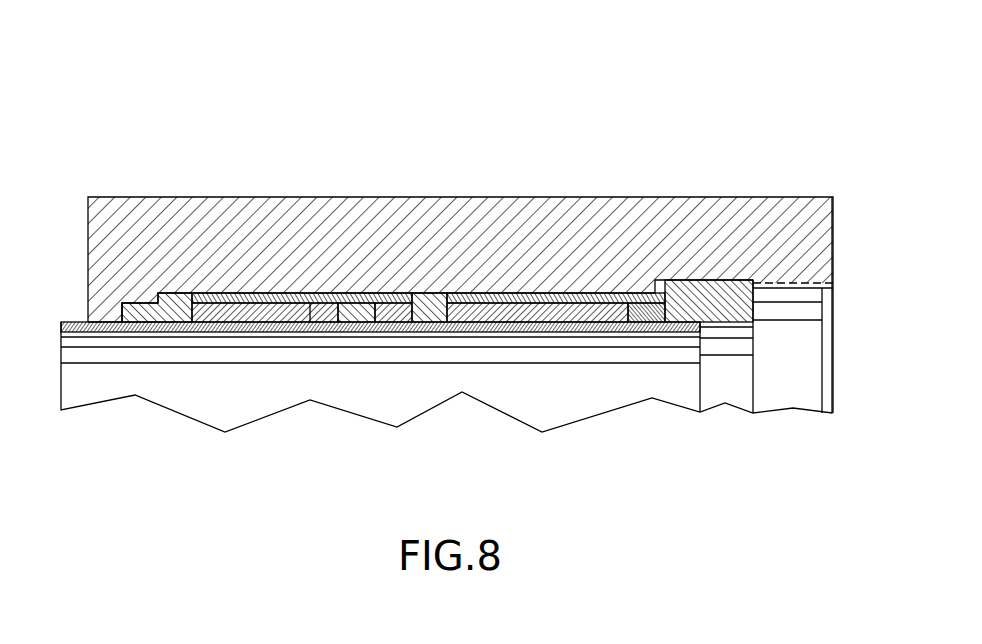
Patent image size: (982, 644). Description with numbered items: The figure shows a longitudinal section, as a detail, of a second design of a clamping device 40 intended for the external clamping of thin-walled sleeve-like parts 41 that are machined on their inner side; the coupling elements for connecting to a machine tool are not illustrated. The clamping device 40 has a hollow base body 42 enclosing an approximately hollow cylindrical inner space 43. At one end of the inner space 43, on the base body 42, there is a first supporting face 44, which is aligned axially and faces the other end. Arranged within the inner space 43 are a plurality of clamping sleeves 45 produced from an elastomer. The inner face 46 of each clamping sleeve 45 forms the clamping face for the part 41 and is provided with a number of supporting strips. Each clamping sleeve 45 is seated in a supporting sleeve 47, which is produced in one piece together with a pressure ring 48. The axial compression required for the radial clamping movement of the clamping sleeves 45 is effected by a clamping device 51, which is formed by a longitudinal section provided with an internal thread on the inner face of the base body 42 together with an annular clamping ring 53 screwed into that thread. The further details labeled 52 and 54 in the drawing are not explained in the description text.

The clamping device 40 is at (590, 110).
The thin-walled sleeve-like part 41 is at (73, 320).
The hollow base body 42 is at (375, 197).
The inner space 43 is at (795, 375).
The first supporting face 44 is at (121, 316).
The clamping sleeve 45 is at (277, 312).
The inner face of the clamping sleeve 46 is at (310, 318).
The supporting sleeve 47 is at (336, 300).
The pressure ring 48 is at (165, 315).
The clamping device (axial compression) 51 is at (725, 372).
The conductive film 52 is at (782, 282).
The annular clamping ring 53 is at (707, 298).
The contact portion 54 is at (663, 312).